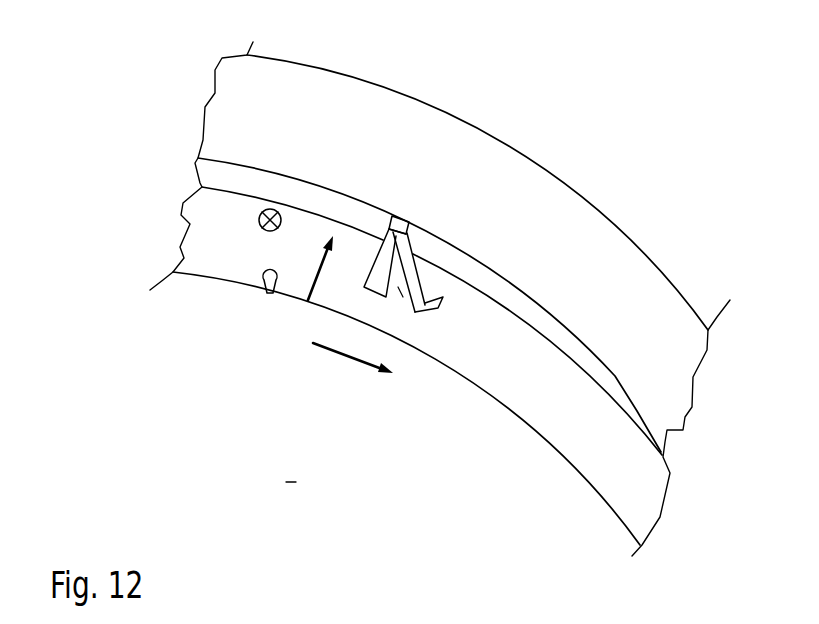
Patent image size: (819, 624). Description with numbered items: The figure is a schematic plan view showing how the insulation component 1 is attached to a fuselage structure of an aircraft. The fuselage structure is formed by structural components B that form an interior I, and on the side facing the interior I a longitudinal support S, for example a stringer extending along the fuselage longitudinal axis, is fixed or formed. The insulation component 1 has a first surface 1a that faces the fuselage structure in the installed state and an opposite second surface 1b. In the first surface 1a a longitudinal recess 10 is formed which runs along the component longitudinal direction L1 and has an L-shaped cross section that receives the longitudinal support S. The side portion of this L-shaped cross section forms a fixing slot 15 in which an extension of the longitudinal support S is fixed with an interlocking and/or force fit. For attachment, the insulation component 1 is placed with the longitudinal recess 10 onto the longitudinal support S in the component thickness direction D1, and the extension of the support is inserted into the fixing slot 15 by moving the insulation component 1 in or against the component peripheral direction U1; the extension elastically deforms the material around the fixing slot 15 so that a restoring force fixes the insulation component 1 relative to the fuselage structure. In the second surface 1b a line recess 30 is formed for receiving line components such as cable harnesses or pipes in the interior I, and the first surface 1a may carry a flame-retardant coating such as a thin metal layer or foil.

The structural component B is at (232, 108).
The longitudinal recess 10 is at (378, 253).
The longitudinal support S is at (401, 226).
The fixing slot 15 is at (440, 309).
The component longitudinal direction L1 is at (258, 219).
The line recess 30 is at (266, 298).
The component thickness direction D1 is at (320, 276).
The component peripheral direction U1 is at (334, 357).
The first surface 1a is at (636, 413).
The second surface 1b is at (584, 482).
The insulation component 1 is at (613, 539).
The interior I is at (291, 467).